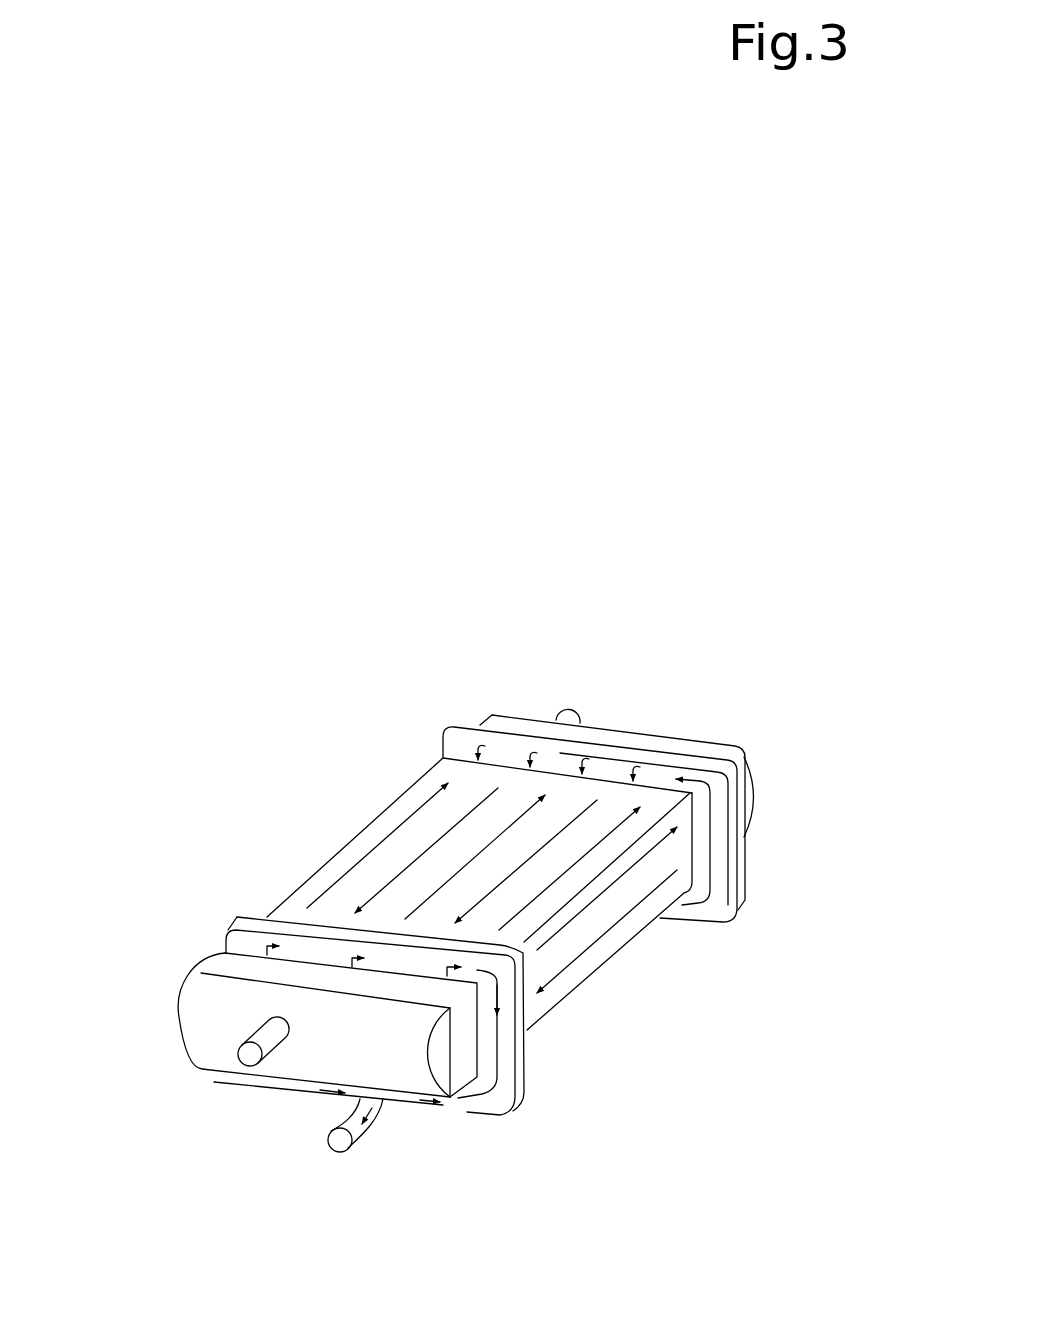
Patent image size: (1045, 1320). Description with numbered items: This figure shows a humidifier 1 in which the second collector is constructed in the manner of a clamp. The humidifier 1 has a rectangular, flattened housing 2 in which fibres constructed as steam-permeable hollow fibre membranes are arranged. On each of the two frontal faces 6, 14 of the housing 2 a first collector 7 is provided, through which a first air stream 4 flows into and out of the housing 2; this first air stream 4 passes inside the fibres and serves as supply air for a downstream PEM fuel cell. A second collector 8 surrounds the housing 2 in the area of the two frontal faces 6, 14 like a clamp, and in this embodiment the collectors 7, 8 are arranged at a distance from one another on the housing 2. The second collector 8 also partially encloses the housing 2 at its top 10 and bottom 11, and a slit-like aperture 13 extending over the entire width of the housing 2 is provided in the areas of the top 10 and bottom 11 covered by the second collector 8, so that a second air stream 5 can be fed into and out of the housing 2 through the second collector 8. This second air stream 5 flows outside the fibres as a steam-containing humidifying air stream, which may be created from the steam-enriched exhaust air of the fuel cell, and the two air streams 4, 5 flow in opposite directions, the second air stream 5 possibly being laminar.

The humidifier 1 is at (268, 795).
The housing 2 is at (680, 812).
The first air stream 4 is at (240, 1062).
The second air stream 5 is at (340, 1137).
The frontal face 6 is at (447, 1043).
The first collector 7 is at (187, 1032).
The second collector 8 is at (750, 808).
The top 10 is at (607, 872).
The bottom 11 is at (608, 958).
The slit-like aperture 13 is at (445, 1073).
The frontal face 14 is at (748, 760).